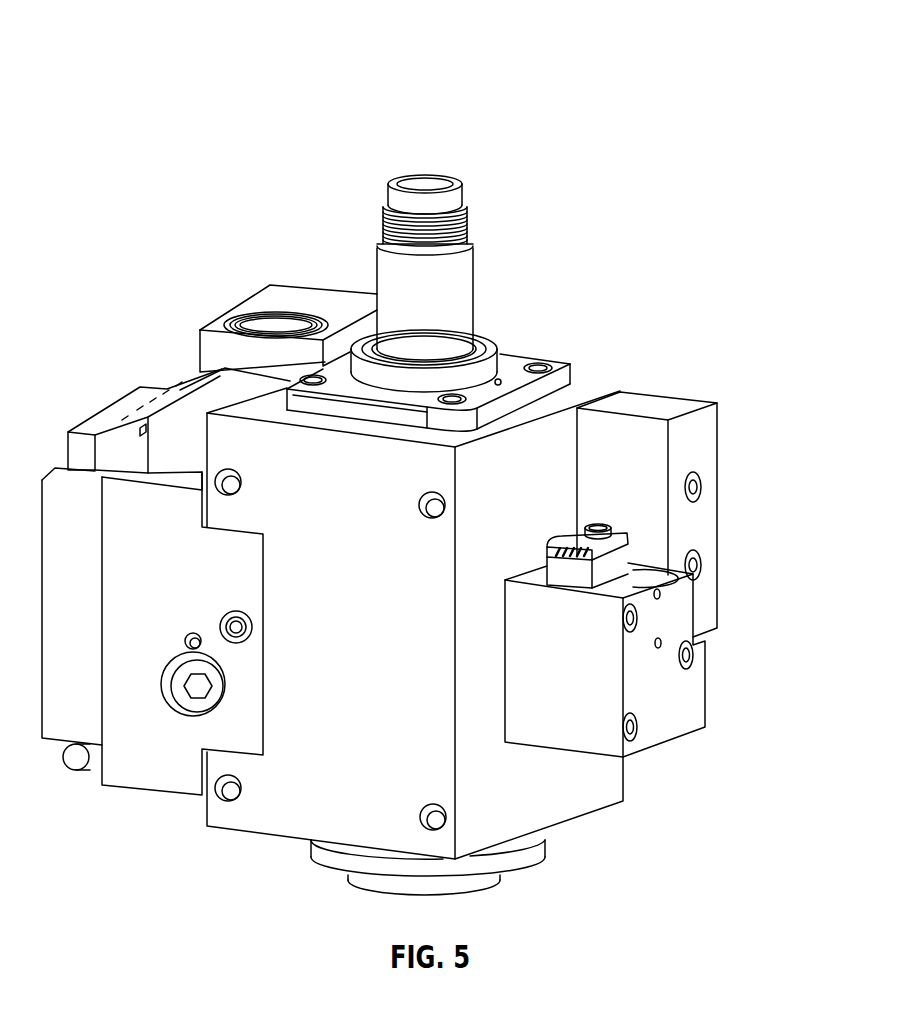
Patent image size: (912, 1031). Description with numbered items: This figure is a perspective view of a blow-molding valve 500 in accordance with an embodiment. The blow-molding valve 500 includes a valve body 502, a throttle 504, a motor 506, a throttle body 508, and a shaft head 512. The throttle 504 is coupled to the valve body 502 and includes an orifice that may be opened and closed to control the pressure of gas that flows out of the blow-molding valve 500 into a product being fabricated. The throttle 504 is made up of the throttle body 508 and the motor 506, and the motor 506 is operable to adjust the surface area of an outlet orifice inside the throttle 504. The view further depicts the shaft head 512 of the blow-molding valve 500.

The blow-molding valve 500 is at (106, 52).
The valve body 502 is at (347, 720).
The throttle 504 is at (579, 730).
The motor 506 is at (634, 566).
The throttle body 508 is at (672, 635).
The shaft head 512 is at (620, 531).